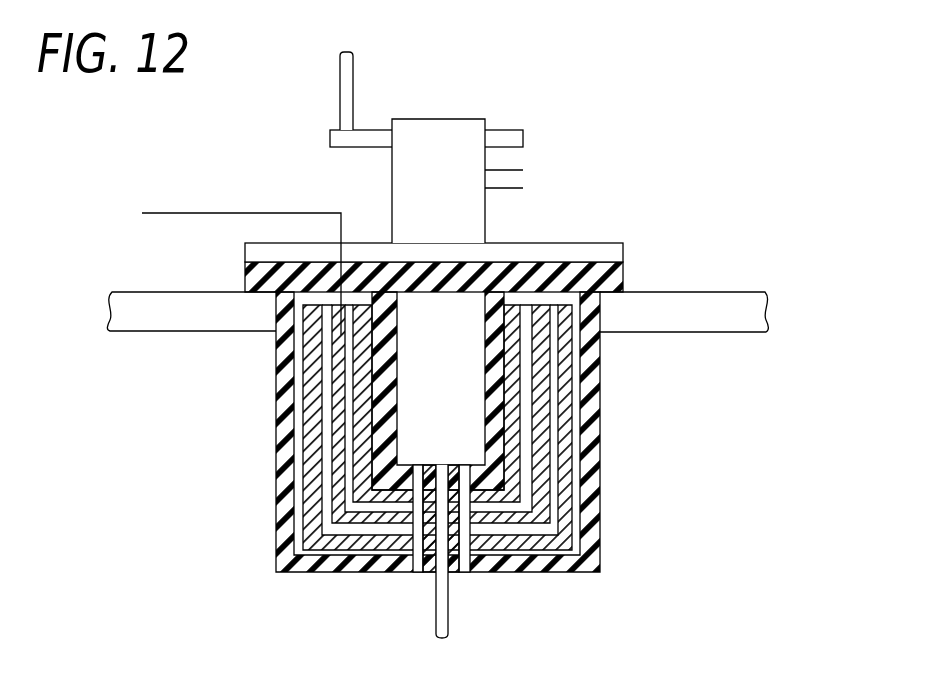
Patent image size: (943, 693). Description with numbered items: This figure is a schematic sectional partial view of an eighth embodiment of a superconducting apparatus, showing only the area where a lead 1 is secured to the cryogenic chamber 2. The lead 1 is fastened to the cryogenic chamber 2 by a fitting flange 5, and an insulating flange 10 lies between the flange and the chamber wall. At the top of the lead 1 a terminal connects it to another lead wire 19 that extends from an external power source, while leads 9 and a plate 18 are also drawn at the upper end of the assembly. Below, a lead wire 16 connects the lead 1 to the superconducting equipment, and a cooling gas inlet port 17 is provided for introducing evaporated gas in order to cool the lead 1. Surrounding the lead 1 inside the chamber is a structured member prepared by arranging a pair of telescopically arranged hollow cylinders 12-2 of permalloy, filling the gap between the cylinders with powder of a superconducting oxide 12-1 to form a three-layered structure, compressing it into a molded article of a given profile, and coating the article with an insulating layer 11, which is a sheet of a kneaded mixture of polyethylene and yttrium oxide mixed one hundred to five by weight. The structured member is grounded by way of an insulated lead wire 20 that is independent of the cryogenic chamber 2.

The lead 1 is at (475, 387).
The cryogenic chamber 2 is at (705, 303).
The fitting flange 5 is at (597, 248).
The lead wires 9 is at (517, 178).
The insulating flange 10 is at (613, 282).
The insulating layer 11 is at (545, 567).
The superconducting oxide 12-1 is at (572, 463).
The hollow cylinders 12-2 is at (580, 542).
The lead wire 16 is at (445, 610).
The cooling gas inlet port 17 is at (417, 568).
The support plate 18 is at (510, 137).
The lead wire 19 is at (345, 92).
The insulated lead wire 20 is at (228, 212).